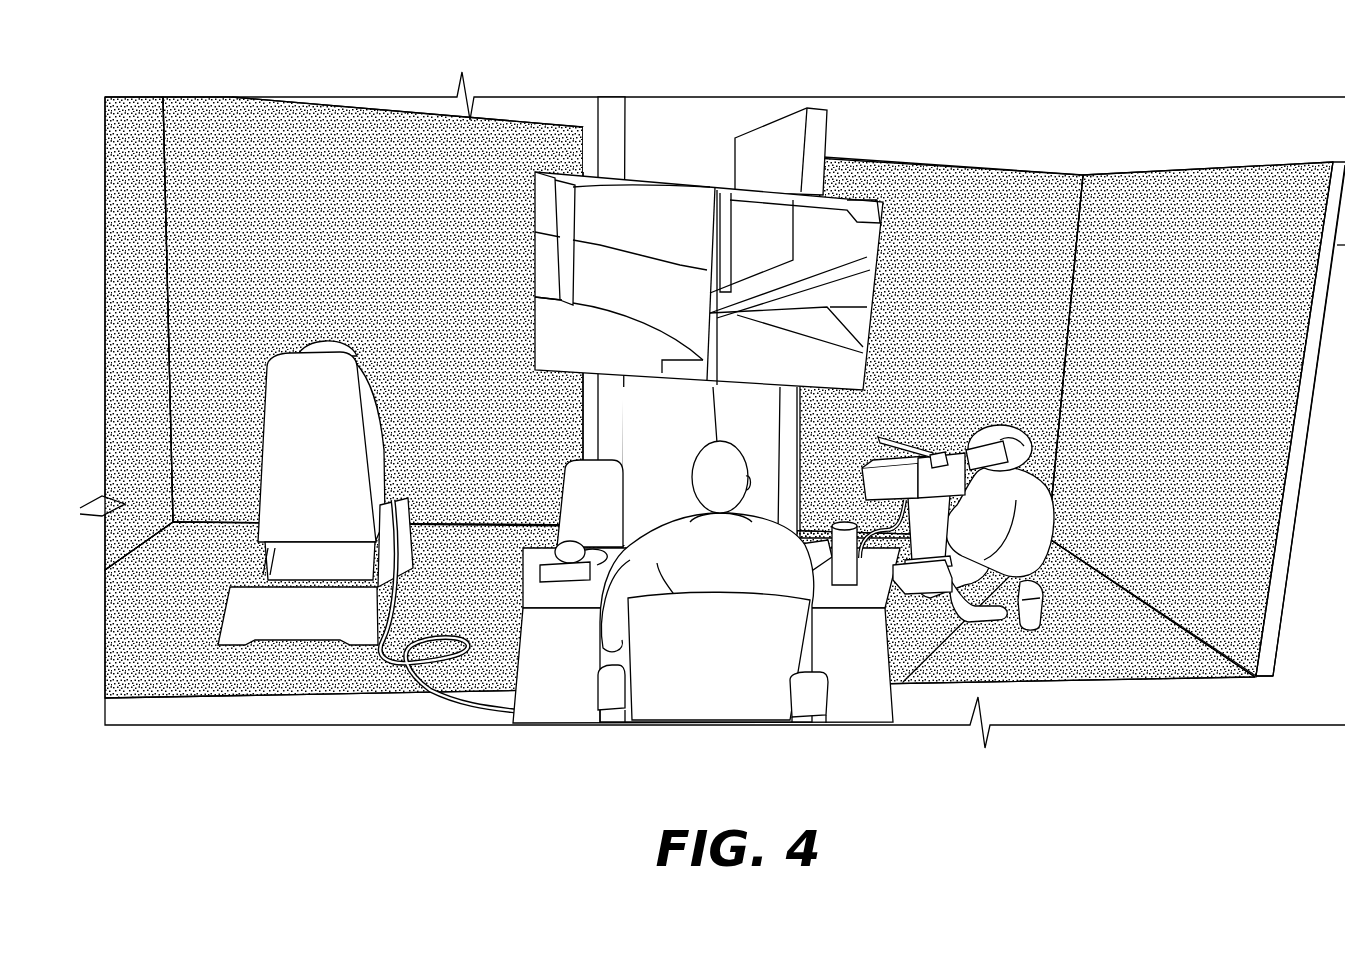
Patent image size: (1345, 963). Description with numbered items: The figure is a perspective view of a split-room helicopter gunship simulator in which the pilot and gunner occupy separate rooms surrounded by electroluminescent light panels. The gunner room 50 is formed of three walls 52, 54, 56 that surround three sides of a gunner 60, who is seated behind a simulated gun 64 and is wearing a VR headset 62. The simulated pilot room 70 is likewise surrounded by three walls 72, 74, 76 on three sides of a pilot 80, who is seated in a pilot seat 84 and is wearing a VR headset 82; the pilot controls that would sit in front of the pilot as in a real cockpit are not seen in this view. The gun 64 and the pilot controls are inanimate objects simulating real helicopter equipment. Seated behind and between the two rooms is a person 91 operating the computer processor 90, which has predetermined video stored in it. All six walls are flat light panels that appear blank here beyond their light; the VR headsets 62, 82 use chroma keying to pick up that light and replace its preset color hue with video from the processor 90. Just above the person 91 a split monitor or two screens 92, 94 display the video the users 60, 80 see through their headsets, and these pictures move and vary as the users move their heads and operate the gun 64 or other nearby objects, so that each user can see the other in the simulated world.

The gunner room 50 is at (983, 163).
The wall 52 is at (997, 190).
The wall 54 is at (830, 127).
The wall 56 is at (1203, 192).
The gunner 60 is at (1019, 500).
The VR headset 62 is at (980, 447).
The simulated gun 64 is at (945, 455).
The simulated pilot room 70 is at (315, 105).
The wall 72 is at (410, 140).
The wall 74 is at (597, 130).
The wall 76 is at (132, 132).
The pilot 80 is at (353, 509).
The VR headset 82 is at (360, 355).
The pilot seat 84 is at (262, 415).
The computer processor 90 is at (562, 498).
The person 91 is at (657, 565).
The screen 92 is at (785, 227).
The screen 94 is at (638, 225).